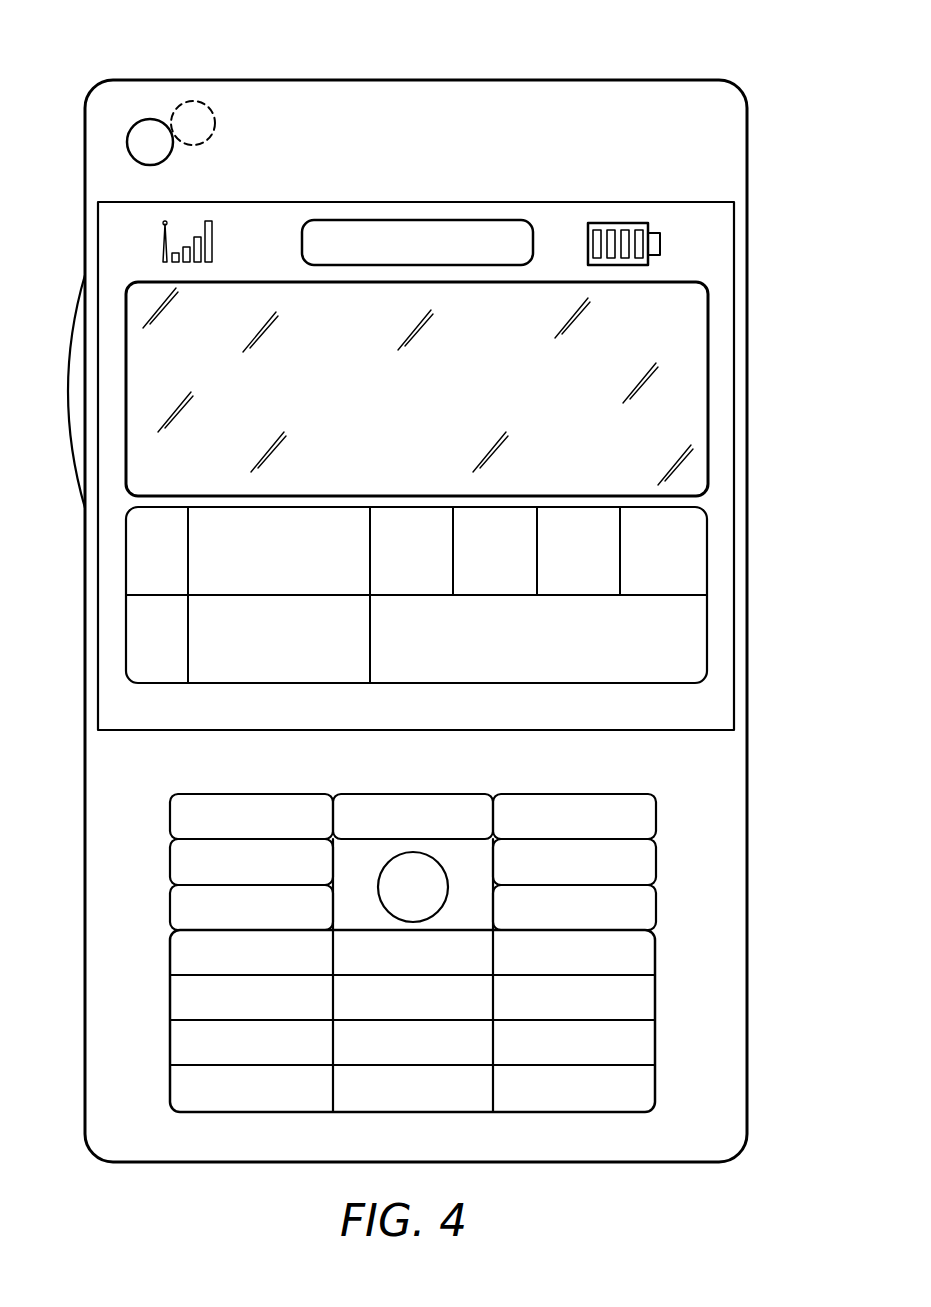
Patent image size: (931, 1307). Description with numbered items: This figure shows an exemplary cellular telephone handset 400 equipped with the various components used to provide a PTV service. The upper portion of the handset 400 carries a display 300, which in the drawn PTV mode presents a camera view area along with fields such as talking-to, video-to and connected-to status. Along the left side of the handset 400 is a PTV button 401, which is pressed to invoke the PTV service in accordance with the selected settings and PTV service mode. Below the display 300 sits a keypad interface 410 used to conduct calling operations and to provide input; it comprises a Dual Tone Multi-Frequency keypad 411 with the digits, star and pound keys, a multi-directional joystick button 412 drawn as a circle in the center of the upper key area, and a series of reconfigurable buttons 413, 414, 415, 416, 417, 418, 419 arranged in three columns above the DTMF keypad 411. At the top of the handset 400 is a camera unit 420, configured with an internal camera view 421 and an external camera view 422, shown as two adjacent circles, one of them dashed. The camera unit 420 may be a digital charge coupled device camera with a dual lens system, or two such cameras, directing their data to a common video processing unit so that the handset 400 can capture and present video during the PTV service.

The display 300 is at (735, 257).
The cellular telephone handset 400 is at (748, 162).
The PTV button 401 is at (68, 396).
The keypad interface 410 is at (460, 931).
The Dual Tone Multi-Frequency (DTMF) keypad 411 is at (659, 933).
The multi-directional joystick button 412 is at (395, 898).
The reconfigurable button 413 is at (170, 818).
The reconfigurable button 414 is at (413, 794).
The reconfigurable button 415 is at (657, 820).
The reconfigurable button 416 is at (170, 864).
The reconfigurable button 417 is at (657, 866).
The reconfigurable button 418 is at (170, 909).
The reconfigurable button 419 is at (657, 911).
The camera unit 420 is at (189, 84).
The internal camera view 421 is at (150, 119).
The external camera view 422 is at (215, 125).